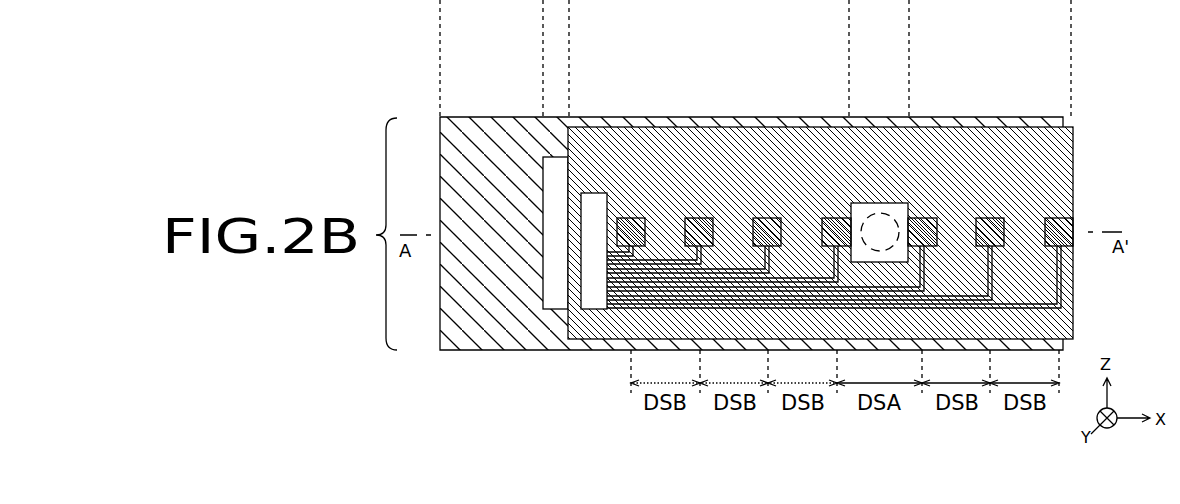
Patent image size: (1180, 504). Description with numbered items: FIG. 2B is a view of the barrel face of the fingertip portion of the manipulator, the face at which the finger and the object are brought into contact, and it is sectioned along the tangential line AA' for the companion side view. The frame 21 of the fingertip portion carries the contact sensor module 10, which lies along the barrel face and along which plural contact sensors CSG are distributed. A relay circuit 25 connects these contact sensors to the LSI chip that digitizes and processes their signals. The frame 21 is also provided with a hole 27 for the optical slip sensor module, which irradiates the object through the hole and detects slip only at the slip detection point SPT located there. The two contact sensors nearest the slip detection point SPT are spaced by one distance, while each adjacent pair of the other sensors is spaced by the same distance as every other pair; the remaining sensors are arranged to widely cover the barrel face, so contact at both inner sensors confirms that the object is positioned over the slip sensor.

The frame 21 is at (443, 167).
The contact sensor module 10 is at (1075, 172).
The relay circuit 25 is at (597, 300).
The hole 27 is at (882, 213).
The slip detection point SPT is at (856, 203).